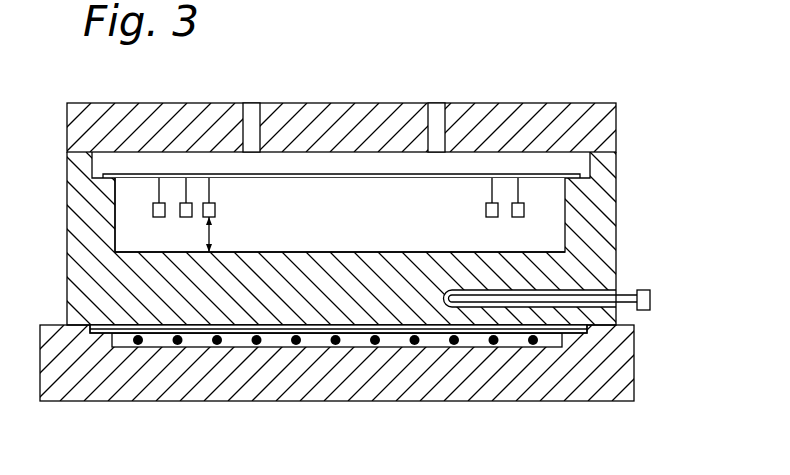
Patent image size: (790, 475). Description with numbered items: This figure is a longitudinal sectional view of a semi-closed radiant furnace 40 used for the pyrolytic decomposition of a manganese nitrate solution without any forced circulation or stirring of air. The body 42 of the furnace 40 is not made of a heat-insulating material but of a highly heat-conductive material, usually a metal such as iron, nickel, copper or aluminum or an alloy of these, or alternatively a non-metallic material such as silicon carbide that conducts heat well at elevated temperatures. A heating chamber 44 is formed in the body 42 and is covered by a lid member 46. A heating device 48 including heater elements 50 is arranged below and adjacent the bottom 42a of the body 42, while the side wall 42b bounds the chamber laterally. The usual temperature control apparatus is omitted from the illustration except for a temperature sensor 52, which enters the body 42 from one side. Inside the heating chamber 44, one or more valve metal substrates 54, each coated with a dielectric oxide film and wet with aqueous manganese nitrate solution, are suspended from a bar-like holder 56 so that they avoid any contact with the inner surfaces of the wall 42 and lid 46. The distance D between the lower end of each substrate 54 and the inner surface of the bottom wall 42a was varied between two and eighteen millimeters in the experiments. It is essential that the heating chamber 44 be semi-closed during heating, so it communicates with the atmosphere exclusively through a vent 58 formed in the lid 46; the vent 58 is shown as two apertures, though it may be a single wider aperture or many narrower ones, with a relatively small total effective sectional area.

The furnace 40 is at (622, 128).
The body 42 is at (608, 206).
The bottom wall 42a is at (365, 252).
The side wall of cavity 42b is at (115, 234).
The heating chamber 44 is at (339, 227).
The lid member 46 is at (508, 112).
The heating device 48 is at (390, 333).
The heater elements 50 is at (360, 345).
The temperature sensor 52 is at (628, 290).
The valve metal 54 is at (215, 208).
The bar-like holder 56 is at (423, 178).
The vent 58 is at (252, 112).
The distance D is at (215, 238).